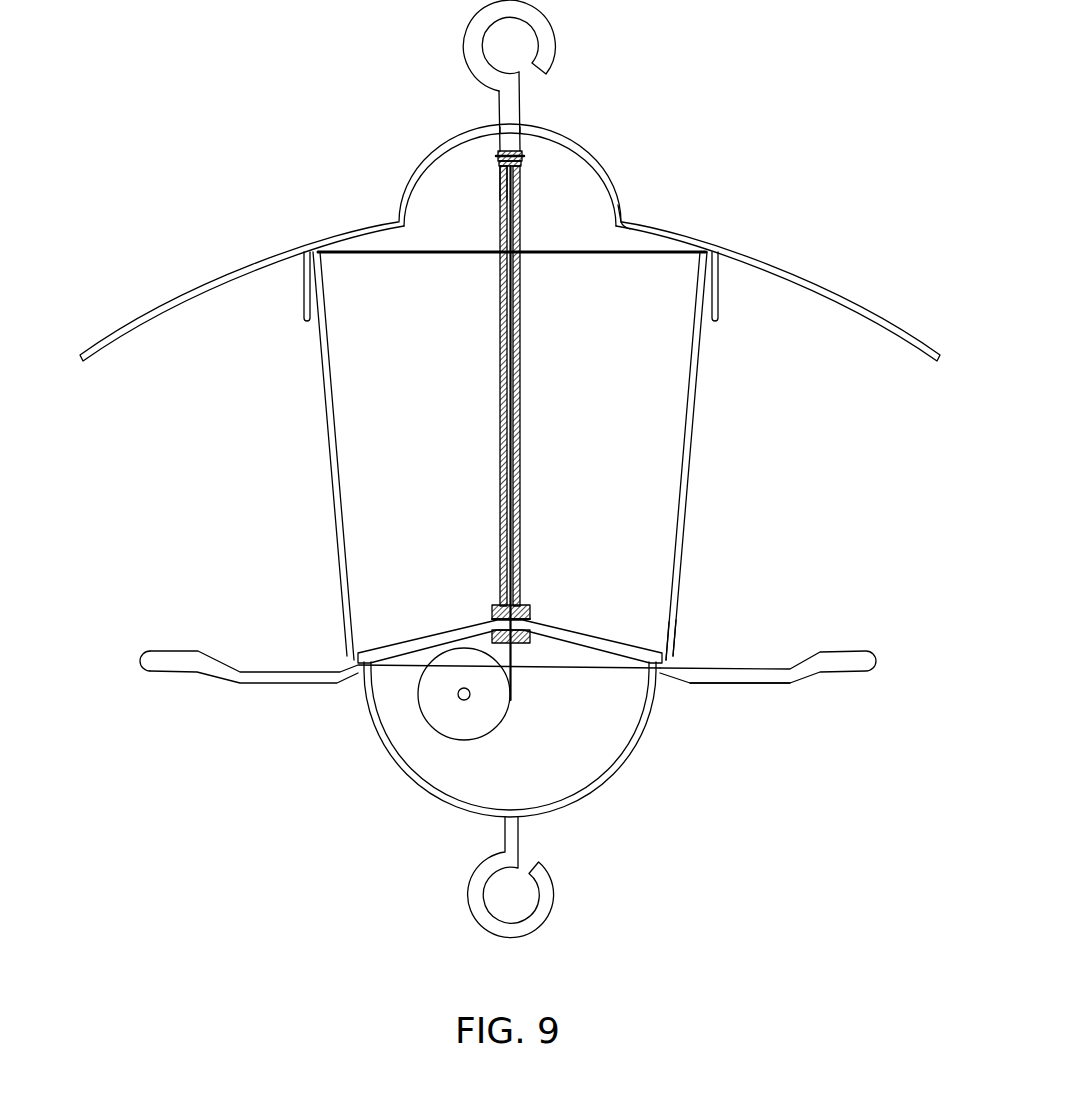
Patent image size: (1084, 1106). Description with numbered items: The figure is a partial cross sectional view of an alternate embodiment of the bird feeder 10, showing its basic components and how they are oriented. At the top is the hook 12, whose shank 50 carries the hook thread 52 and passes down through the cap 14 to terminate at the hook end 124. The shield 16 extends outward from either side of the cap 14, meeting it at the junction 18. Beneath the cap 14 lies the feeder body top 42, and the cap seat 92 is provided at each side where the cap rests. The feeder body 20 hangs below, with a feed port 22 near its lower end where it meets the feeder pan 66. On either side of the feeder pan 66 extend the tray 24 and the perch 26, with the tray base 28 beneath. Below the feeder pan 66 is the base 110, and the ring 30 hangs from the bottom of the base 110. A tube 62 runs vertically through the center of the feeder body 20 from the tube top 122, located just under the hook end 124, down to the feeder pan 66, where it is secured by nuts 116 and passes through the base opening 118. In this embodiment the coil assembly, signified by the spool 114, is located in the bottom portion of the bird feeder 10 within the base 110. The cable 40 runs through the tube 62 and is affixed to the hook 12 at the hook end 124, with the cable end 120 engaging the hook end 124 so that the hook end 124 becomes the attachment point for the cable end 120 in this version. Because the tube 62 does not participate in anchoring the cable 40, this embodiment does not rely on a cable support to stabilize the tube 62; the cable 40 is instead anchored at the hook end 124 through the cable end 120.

The bird feeder 10 is at (510, 182).
The hook 12 is at (552, 40).
The cap 14 is at (578, 148).
The shield 16 is at (773, 262).
The junction 18 is at (623, 221).
The feeder body 20 is at (692, 468).
The feed port 22 is at (668, 633).
The tray 24 is at (205, 655).
The perch 26 is at (865, 653).
The tray base 28 is at (707, 687).
The ring 30 is at (547, 908).
The cable 40 is at (513, 690).
The feeder body top 42 is at (367, 253).
The shank 50 is at (505, 110).
The hook thread 52 is at (497, 157).
The tube 62 is at (522, 333).
The feeder pan 66 is at (580, 628).
The cap seat 92 is at (302, 312).
The base 110 is at (600, 790).
The spool 114 is at (430, 702).
The nuts 116 is at (527, 637).
The base opening 118 is at (500, 622).
The cable end 120 is at (523, 168).
The tube top 122 is at (502, 178).
The hook end 124 is at (512, 157).